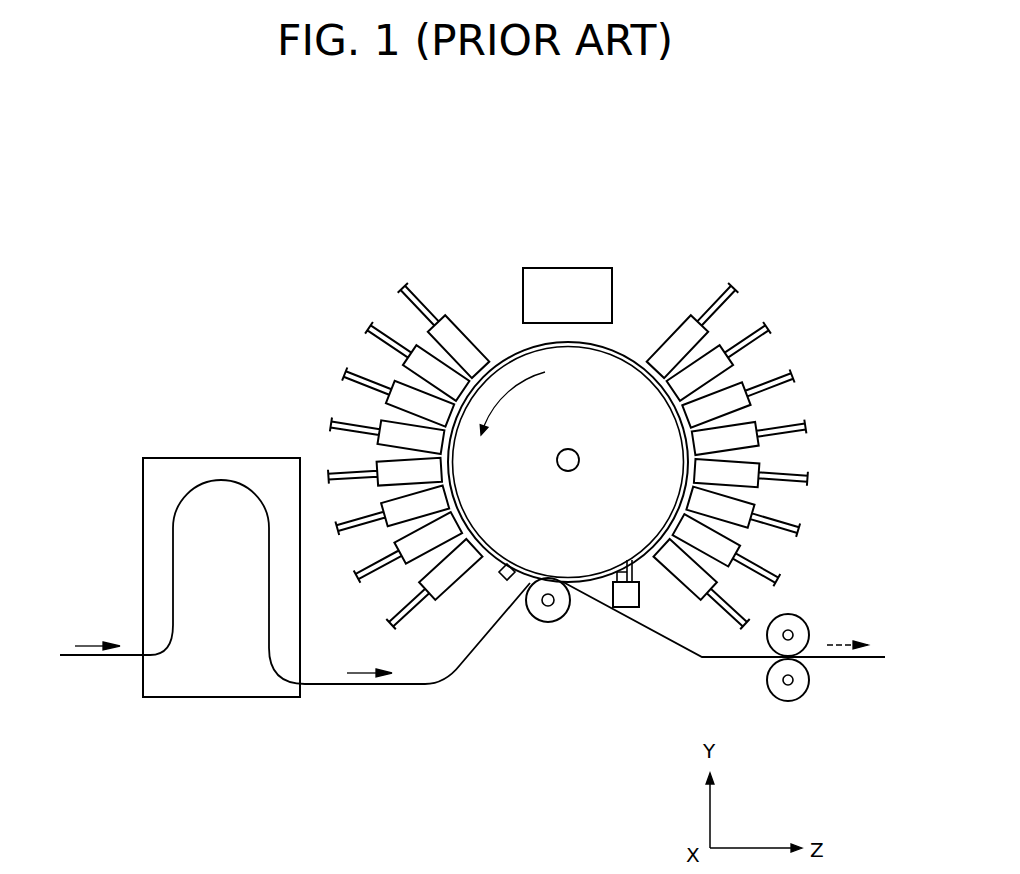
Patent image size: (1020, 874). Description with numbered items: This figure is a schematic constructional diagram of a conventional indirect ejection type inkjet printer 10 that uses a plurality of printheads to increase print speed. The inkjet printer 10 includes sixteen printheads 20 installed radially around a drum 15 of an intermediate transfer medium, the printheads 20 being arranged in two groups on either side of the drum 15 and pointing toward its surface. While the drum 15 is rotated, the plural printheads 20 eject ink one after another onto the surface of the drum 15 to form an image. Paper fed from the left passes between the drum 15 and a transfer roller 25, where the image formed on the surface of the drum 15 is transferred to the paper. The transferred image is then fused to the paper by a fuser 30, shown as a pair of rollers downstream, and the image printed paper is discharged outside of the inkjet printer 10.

The inkjet printer 10 is at (352, 178).
The drum 15 is at (513, 352).
The printheads 20 is at (442, 358).
The transfer roller 25 is at (563, 605).
The fuser 30 is at (821, 633).